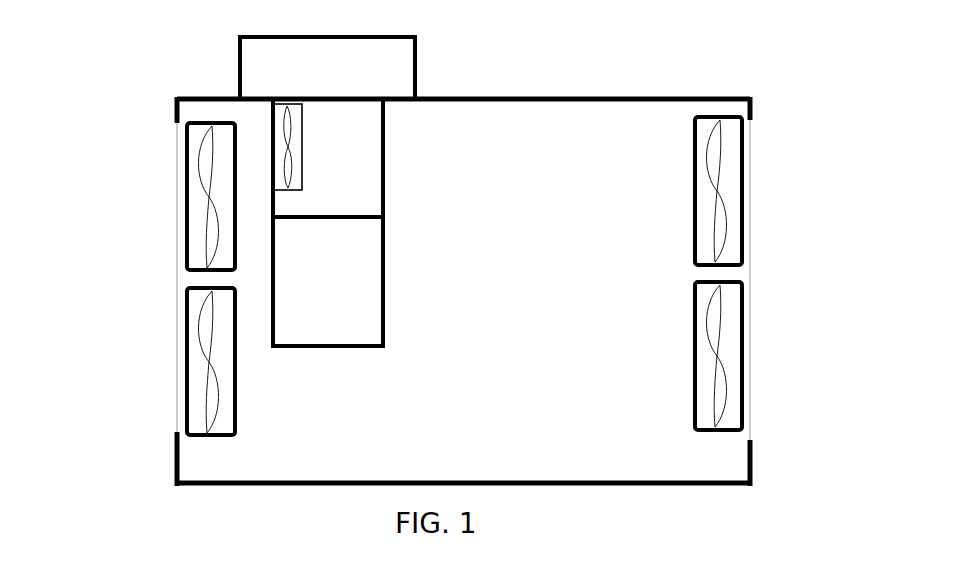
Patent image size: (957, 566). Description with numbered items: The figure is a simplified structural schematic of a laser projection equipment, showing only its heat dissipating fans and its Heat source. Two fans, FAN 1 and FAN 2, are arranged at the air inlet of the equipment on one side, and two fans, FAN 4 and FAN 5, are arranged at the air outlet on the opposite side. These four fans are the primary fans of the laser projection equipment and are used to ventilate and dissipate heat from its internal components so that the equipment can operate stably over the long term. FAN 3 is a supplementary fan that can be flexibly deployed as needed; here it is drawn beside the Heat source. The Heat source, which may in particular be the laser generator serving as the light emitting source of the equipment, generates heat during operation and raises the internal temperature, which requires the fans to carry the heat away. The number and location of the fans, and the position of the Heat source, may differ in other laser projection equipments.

The fan FAN 1 is at (188, 343).
The fan FAN 2 is at (188, 182).
The supplementary fan FAN 3 is at (272, 108).
The fan FAN 4 is at (733, 177).
The fan FAN 5 is at (733, 342).
The heat source Heat source is at (385, 268).